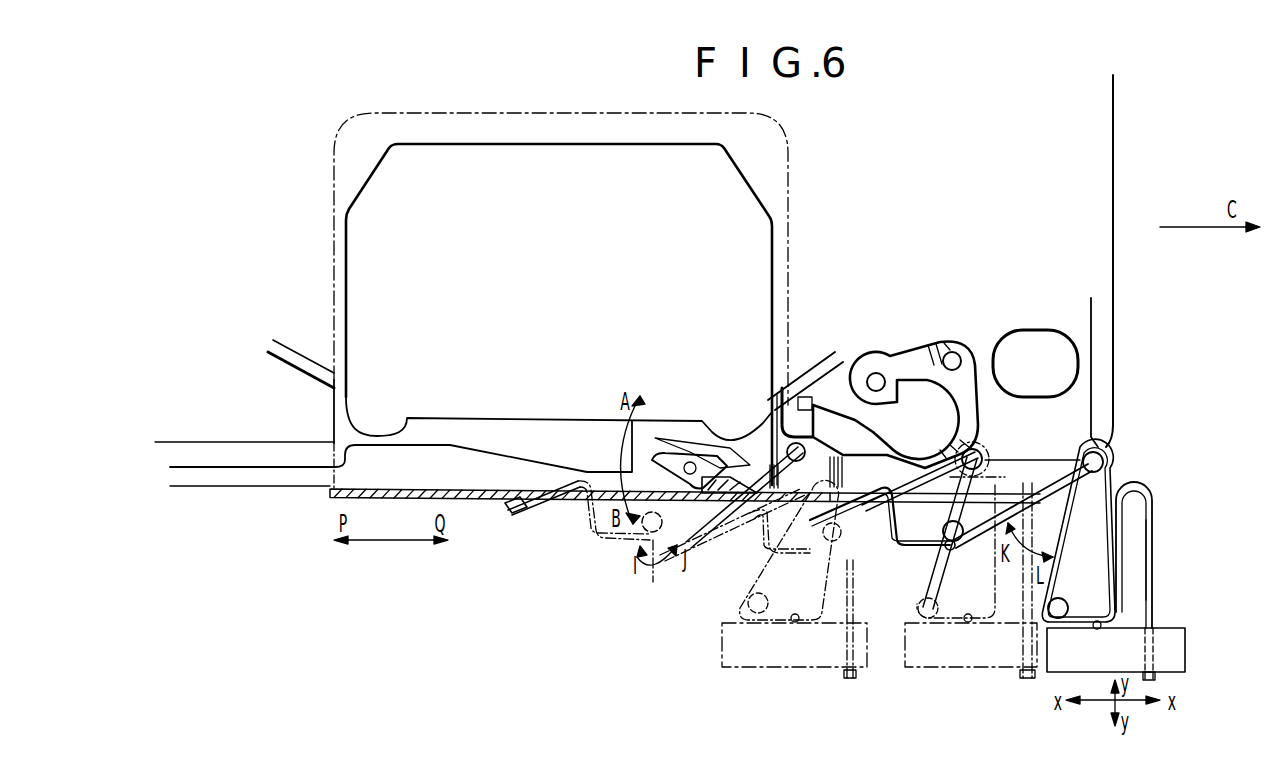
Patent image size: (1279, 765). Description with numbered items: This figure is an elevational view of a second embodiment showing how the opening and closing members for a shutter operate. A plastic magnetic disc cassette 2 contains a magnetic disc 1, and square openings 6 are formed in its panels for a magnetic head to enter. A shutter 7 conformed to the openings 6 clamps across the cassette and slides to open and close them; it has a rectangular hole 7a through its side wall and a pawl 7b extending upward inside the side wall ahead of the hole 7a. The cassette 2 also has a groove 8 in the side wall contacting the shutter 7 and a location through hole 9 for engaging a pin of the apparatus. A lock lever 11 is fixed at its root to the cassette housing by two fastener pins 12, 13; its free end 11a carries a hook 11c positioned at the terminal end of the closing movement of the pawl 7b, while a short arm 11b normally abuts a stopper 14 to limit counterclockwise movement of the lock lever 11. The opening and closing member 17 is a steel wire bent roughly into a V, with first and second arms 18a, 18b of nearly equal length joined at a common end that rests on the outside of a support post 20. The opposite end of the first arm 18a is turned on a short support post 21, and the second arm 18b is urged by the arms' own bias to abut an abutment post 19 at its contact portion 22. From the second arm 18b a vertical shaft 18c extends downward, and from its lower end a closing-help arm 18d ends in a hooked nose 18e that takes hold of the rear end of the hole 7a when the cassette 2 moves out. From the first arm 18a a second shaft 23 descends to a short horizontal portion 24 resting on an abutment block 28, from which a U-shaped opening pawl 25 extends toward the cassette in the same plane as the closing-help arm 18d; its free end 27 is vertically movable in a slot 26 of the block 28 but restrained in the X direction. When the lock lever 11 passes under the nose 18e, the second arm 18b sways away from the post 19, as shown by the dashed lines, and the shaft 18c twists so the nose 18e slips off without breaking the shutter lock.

The magnetic disc 1 is at (1080, 392).
The magnetic disc cassette 2 is at (1116, 130).
The square openings 6 is at (770, 258).
The shutter 7 is at (786, 172).
The rectangular hole 7a is at (517, 513).
The pawl 7b is at (730, 513).
The groove 8 is at (1043, 507).
The location through hole 9 is at (1056, 357).
The lock lever 11 is at (980, 420).
The free end 11a is at (687, 463).
The arm 11b is at (813, 415).
The hook 11c is at (695, 473).
The fastener pin 12 is at (876, 372).
The fastener pin 13 is at (952, 352).
The stopper 14 is at (763, 423).
The opening and closing member 17 is at (1156, 527).
The first arm 18a is at (1095, 507).
The second arm 18b is at (1043, 470).
The vertical shaft 18c is at (957, 595).
The closing-help arm 18d is at (918, 550).
The hooked nose 18e is at (568, 475).
The abutment post 19 is at (945, 531).
The support post 20 is at (1000, 450).
The support post 21 is at (1066, 605).
The contact portion 22 is at (955, 546).
The second shaft 23 is at (1097, 620).
The horizontal portion 24 is at (1100, 654).
The opening pawl 25 is at (858, 440).
The slot 26 is at (1152, 628).
The free end 27 is at (1147, 570).
The abutment block 28 is at (1175, 648).